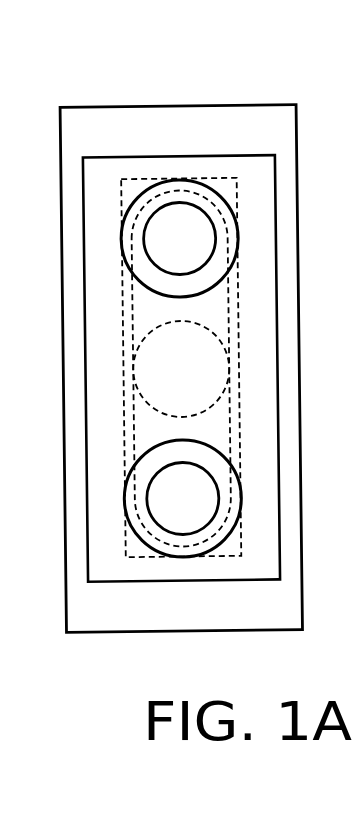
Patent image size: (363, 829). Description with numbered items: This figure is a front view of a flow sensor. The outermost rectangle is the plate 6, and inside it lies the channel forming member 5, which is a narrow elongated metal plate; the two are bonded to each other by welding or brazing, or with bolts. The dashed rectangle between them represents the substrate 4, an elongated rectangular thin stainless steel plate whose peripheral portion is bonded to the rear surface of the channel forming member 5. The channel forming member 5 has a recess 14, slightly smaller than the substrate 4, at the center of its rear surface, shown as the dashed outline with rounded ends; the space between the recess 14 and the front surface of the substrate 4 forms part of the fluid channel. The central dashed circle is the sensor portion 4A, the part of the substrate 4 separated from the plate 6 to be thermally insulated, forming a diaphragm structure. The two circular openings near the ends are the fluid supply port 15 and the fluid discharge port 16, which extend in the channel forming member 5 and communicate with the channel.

The plate 6 is at (103, 107).
The channel forming member 5 is at (97, 157).
The substrate 4 is at (215, 178).
The recess 14 is at (228, 305).
The sensor portion 4A is at (212, 408).
The fluid supply port 15 is at (153, 262).
The fluid discharge port 16 is at (176, 471).